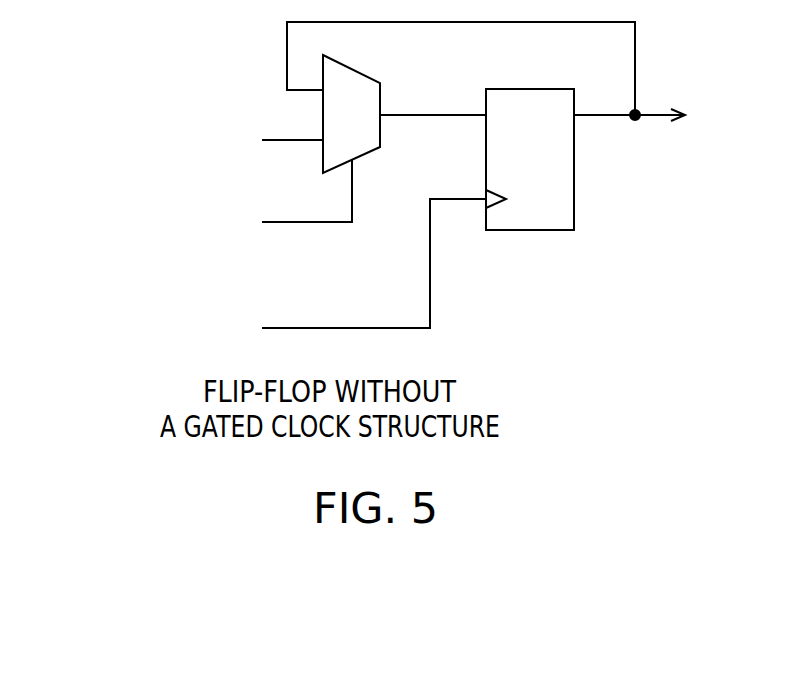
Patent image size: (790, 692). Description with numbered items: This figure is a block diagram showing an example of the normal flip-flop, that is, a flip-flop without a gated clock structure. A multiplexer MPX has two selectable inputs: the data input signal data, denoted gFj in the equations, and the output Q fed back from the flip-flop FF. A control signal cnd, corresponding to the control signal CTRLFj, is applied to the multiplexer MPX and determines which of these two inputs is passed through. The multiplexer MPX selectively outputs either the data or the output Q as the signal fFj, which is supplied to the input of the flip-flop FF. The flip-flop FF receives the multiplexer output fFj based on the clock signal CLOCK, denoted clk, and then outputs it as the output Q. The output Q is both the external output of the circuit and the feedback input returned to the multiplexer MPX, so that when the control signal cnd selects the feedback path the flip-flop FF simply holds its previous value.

The multiplexer MPX is at (351, 114).
The multiplexer output fFj is at (433, 135).
The flip-flop FF is at (530, 159).
The output Q is at (642, 116).
The data input signal data is at (215, 141).
The control signal cnd is at (203, 201).
The clock signal CLOCK is at (293, 271).